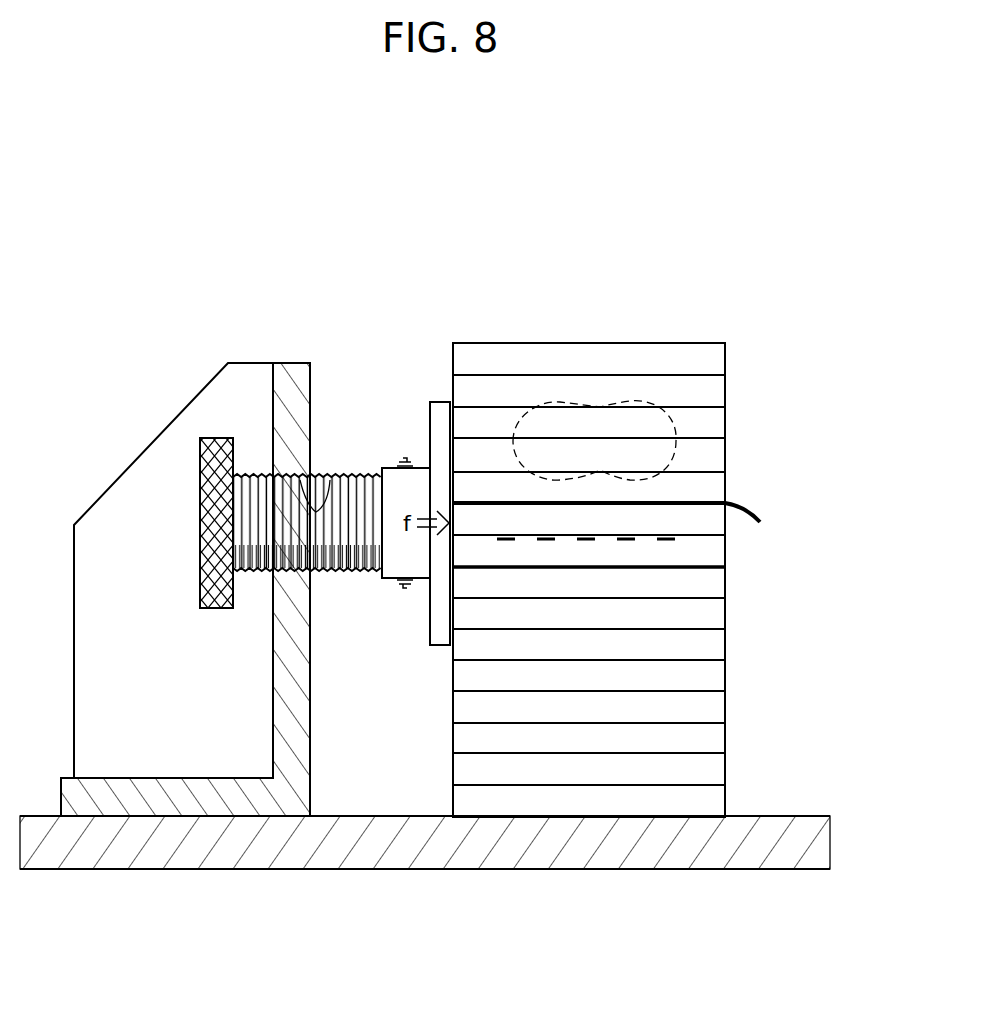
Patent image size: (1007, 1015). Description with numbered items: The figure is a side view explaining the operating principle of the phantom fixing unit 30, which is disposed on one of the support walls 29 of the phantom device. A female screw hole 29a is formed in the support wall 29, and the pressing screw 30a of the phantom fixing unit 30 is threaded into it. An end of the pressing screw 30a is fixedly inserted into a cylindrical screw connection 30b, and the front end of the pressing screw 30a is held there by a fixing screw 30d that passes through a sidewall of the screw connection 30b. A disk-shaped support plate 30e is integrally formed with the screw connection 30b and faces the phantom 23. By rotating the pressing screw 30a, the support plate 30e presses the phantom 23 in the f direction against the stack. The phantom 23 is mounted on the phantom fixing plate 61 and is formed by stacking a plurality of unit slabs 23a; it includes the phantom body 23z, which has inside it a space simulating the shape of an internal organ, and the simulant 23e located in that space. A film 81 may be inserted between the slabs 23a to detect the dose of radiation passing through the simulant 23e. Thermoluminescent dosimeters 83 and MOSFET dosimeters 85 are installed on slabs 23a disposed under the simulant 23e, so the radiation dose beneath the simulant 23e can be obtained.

The phantom 23 is at (563, 331).
The unit slab 23a is at (705, 708).
The simulant 23e is at (676, 425).
The phantom body 23z is at (730, 770).
The support wall 29 is at (165, 399).
The female screw hole 29a is at (318, 500).
The phantom fixing unit 30 is at (168, 503).
The pressing screw 30a is at (217, 560).
The screw connection 30b is at (393, 560).
The fixing screw 30d is at (402, 590).
The support plate 30e is at (430, 400).
The phantom fixing plate 61 is at (372, 845).
The film 81 is at (755, 510).
The thermoluminescent dosimeter 83 is at (673, 537).
The MOSFET dosimeter 85 is at (728, 567).